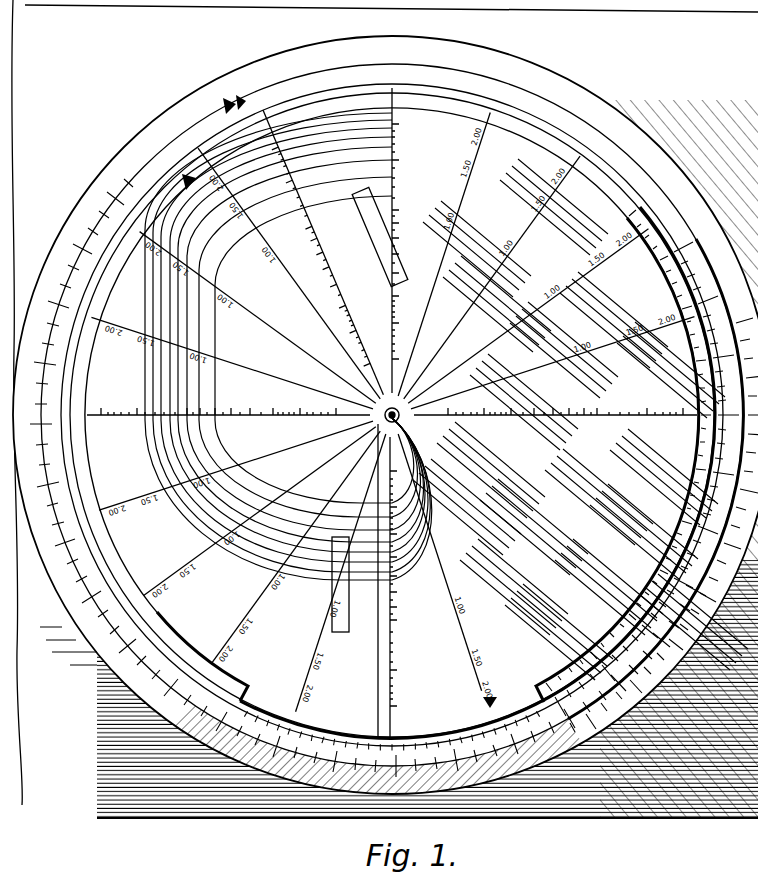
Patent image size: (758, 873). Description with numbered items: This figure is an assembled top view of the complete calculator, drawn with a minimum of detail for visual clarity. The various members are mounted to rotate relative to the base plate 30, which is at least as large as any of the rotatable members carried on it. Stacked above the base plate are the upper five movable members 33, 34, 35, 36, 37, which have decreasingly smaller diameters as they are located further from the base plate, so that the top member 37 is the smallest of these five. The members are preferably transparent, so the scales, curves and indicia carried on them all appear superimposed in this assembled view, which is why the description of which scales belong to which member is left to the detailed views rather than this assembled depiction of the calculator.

The base plate 30 is at (82, 108).
The movable member 33 is at (552, 84).
The movable member 34 is at (662, 219).
The movable member 35 is at (596, 168).
The movable member 36 is at (385, 454).
The top member 37 is at (532, 149).